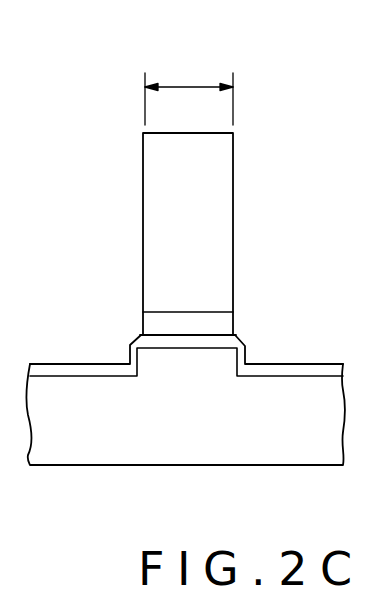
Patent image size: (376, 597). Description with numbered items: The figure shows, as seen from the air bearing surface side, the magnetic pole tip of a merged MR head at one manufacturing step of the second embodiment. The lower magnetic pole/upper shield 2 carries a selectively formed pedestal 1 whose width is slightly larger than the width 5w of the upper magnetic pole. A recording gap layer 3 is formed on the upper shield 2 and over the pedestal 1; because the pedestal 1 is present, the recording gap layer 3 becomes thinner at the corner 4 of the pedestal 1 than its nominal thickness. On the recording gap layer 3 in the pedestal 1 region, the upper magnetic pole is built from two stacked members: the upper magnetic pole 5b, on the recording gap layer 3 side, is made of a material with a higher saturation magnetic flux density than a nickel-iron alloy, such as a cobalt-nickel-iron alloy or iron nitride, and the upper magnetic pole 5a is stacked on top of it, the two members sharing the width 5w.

The pedestal 1 is at (193, 365).
The upper shield 2 is at (130, 435).
The recording gap layer 3 is at (152, 340).
The corner 4 is at (243, 346).
The upper magnetic pole 5a is at (222, 227).
The upper magnetic pole 5b is at (205, 323).
The width of upper magnetic pole 5w is at (188, 85).